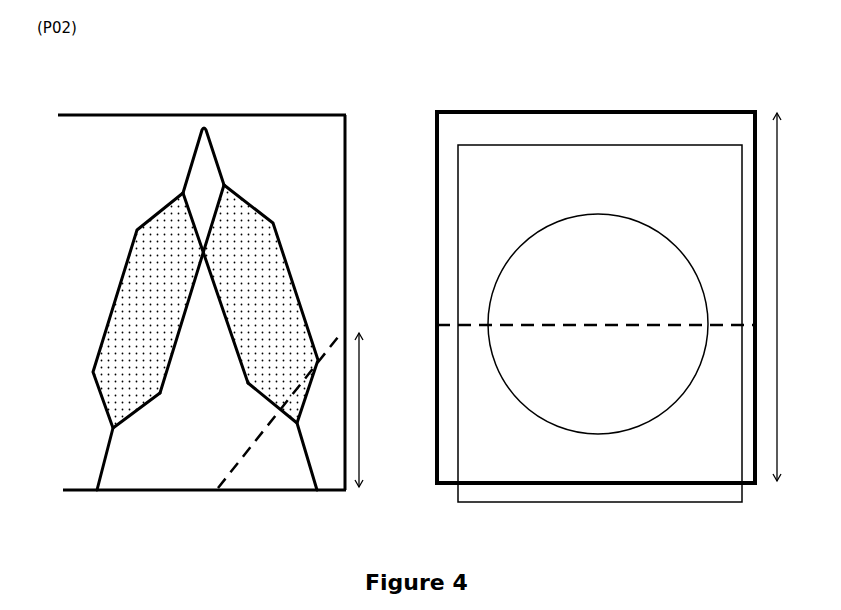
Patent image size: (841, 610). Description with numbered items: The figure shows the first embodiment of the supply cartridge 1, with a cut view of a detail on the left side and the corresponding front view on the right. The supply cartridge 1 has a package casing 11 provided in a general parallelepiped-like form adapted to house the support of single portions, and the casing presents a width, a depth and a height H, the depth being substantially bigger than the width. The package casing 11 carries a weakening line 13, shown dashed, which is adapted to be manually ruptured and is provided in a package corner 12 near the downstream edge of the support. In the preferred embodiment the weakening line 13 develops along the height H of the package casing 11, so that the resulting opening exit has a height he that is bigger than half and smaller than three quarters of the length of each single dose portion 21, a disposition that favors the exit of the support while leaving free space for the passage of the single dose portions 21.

The supply cartridge 1 is at (404, 309).
The package casing 11 is at (407, 103).
The package corner 12 is at (339, 493).
The weakening line 13 is at (251, 440).
The single dose portion 21 is at (400, 309).
The height dimension he is at (376, 410).
The height H is at (789, 297).